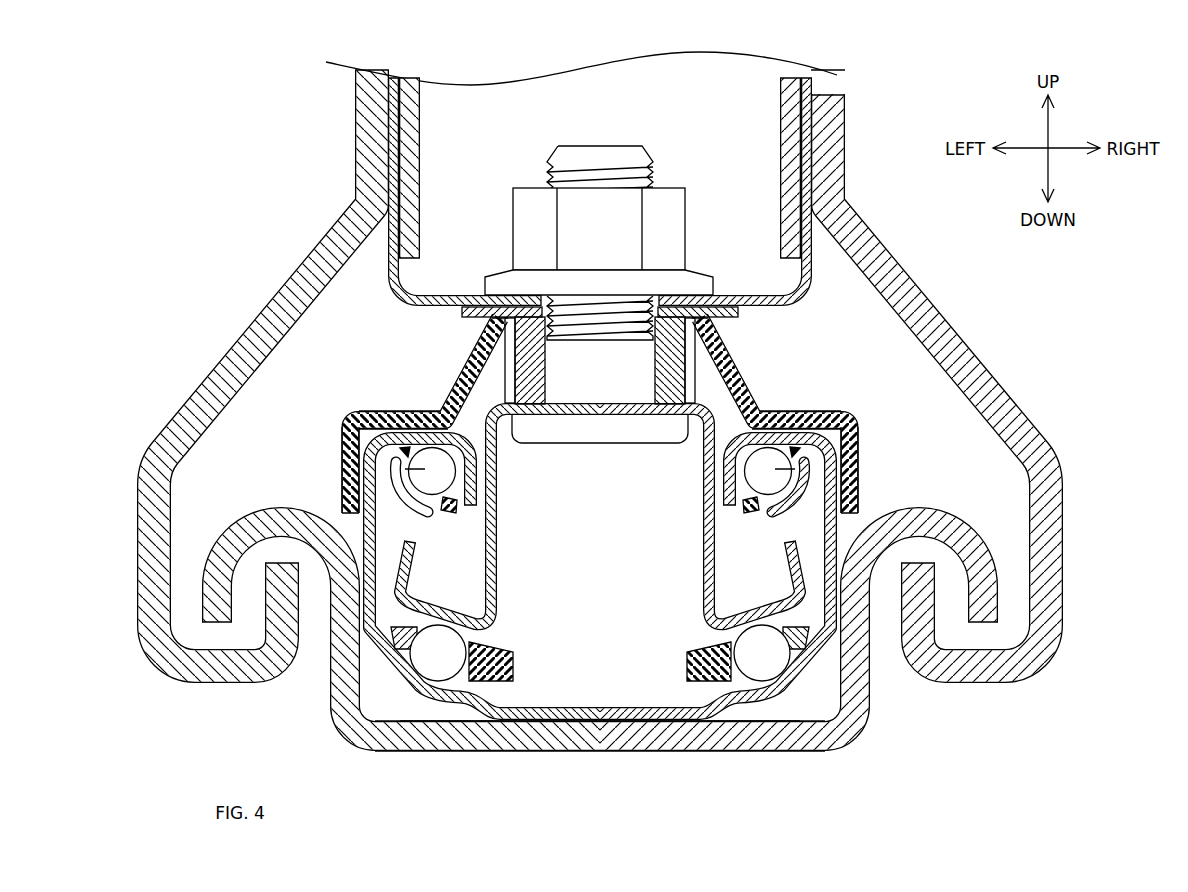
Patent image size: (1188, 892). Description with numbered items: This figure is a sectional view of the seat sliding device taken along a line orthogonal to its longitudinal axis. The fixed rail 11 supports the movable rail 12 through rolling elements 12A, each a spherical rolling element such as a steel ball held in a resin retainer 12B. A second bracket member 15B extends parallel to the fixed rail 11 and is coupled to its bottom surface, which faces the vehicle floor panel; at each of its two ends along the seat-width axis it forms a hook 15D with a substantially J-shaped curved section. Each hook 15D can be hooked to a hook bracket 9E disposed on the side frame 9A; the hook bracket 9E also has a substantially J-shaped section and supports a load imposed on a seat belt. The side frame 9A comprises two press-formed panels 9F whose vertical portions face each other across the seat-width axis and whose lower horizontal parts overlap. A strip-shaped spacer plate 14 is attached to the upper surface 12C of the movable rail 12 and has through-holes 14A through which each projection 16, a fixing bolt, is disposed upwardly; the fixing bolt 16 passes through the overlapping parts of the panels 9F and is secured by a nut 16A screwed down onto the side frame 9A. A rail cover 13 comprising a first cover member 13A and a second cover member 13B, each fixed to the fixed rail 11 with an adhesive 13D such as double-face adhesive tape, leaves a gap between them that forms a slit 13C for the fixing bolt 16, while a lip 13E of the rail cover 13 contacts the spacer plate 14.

The side frame 9A is at (352, 250).
The hook bracket 9E is at (264, 322).
The panel 9F is at (437, 294).
The fixed rail 11 is at (383, 675).
The movable rail 12 is at (500, 578).
The rolling element 12A is at (360, 437).
The retainer 12B is at (451, 516).
The upper surface 12C is at (522, 441).
The rail cover 13 is at (600, 470).
The first cover member 13A is at (478, 378).
The second cover member 13B is at (722, 378).
The slit 13C is at (466, 400).
The adhesive 13D is at (400, 413).
The lip 13E is at (488, 338).
The spacer plate 14 is at (505, 350).
The through-hole 14A is at (518, 318).
The second bracket member 15B is at (634, 753).
The hook 15D is at (272, 507).
The fixing bolt 16 is at (603, 144).
The nut 16A is at (687, 216).